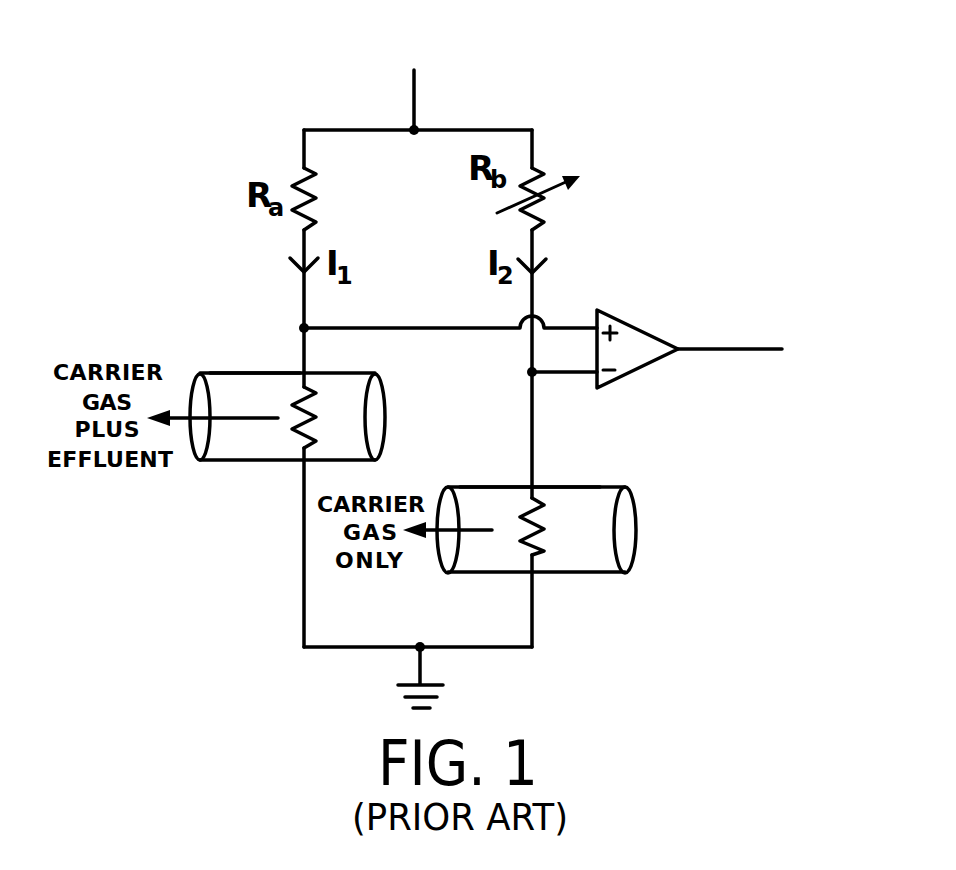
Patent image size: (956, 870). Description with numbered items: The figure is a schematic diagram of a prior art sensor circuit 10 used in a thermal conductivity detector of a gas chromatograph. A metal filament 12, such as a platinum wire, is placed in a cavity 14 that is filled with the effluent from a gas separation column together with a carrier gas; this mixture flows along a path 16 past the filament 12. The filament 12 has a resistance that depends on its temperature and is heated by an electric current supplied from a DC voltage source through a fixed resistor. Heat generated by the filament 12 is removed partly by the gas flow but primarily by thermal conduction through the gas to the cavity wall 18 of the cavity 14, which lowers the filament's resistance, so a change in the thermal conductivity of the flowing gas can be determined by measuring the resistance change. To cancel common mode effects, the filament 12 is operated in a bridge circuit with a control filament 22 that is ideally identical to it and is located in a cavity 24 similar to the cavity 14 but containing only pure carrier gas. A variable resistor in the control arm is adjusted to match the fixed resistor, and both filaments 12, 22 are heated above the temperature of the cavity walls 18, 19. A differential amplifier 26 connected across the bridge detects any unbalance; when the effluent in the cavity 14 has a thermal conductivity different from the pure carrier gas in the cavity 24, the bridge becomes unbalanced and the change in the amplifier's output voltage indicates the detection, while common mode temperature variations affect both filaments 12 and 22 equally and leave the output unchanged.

The sensor circuit 10 is at (200, 220).
The metal filament 12 is at (293, 433).
The cavity 14 is at (232, 442).
The path 16 is at (267, 410).
The cavity wall 18 is at (258, 367).
The cavity wall 19 is at (557, 487).
The control filament 22 is at (537, 553).
The cavity 24 is at (590, 562).
The differential amplifier 26 is at (643, 350).